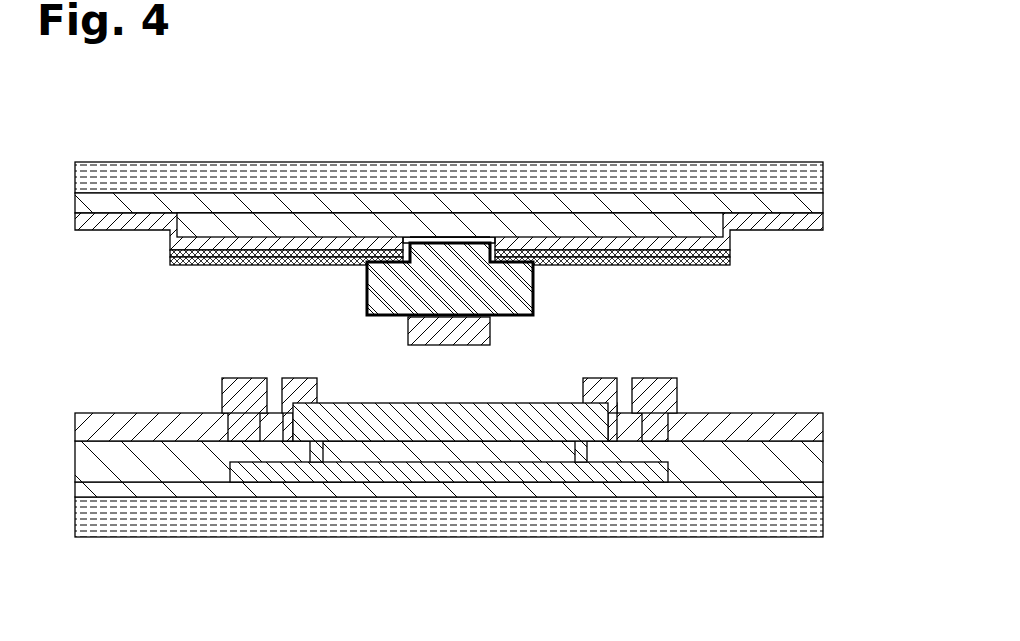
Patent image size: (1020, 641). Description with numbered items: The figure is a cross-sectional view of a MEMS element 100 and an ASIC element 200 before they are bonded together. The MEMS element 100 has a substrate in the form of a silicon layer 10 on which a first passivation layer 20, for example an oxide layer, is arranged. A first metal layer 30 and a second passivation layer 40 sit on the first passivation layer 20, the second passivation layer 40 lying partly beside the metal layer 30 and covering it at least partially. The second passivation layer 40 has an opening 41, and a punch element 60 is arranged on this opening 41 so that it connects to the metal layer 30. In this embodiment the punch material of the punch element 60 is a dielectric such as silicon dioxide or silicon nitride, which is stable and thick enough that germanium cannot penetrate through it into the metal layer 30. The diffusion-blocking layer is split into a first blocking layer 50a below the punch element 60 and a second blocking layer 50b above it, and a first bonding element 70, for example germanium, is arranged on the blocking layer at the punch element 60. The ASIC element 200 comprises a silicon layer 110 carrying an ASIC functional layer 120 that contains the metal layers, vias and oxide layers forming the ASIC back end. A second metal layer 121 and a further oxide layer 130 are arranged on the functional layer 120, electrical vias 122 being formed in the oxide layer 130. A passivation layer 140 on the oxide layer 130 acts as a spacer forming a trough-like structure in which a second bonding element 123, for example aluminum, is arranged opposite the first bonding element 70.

The MEMS element 100 is at (130, 148).
The silicon layer 10 is at (825, 182).
The first passivation layer 20 is at (825, 210).
The first metal layer 30 is at (276, 225).
The second passivation layer 40 is at (812, 218).
The opening 41 is at (433, 240).
The first blocking layer 50a is at (735, 258).
The second blocking layer 50b is at (735, 263).
The punch element 60 is at (513, 278).
The first bonding element 70 is at (470, 323).
The ASIC element 200 is at (132, 400).
The silicon layer 110 is at (826, 527).
The ASIC functional layer 120 is at (826, 487).
The second metal layer 121 is at (440, 477).
The electrical vias 122 is at (323, 450).
The second bonding element 123 is at (350, 415).
The further oxide layer 130 is at (826, 452).
The passivation layer 140 is at (826, 425).